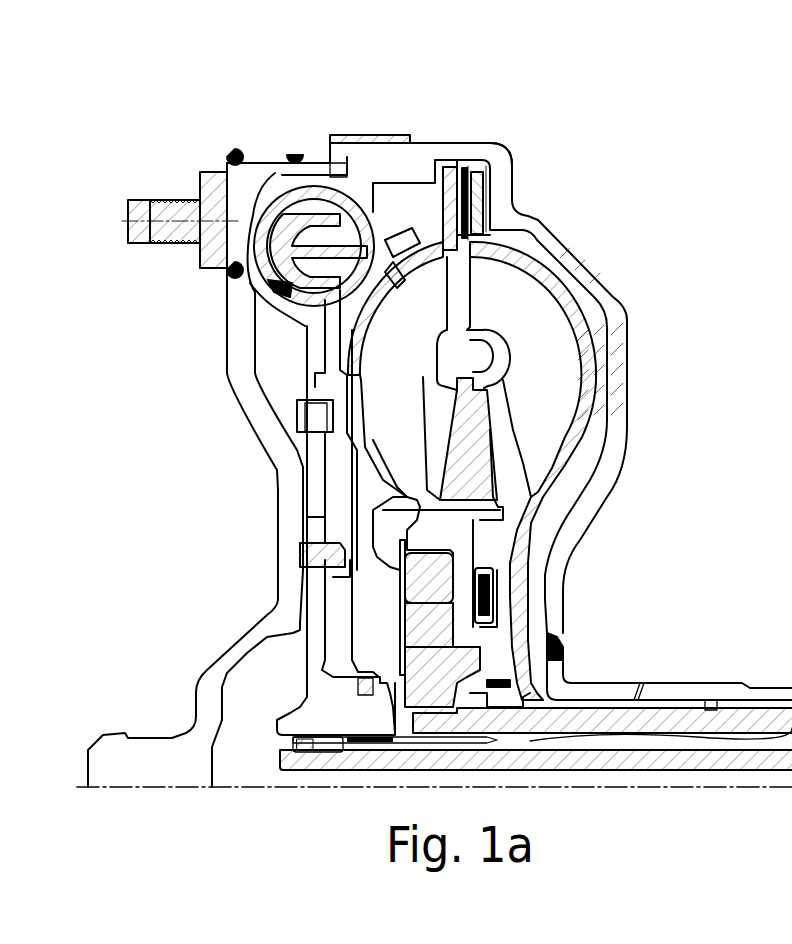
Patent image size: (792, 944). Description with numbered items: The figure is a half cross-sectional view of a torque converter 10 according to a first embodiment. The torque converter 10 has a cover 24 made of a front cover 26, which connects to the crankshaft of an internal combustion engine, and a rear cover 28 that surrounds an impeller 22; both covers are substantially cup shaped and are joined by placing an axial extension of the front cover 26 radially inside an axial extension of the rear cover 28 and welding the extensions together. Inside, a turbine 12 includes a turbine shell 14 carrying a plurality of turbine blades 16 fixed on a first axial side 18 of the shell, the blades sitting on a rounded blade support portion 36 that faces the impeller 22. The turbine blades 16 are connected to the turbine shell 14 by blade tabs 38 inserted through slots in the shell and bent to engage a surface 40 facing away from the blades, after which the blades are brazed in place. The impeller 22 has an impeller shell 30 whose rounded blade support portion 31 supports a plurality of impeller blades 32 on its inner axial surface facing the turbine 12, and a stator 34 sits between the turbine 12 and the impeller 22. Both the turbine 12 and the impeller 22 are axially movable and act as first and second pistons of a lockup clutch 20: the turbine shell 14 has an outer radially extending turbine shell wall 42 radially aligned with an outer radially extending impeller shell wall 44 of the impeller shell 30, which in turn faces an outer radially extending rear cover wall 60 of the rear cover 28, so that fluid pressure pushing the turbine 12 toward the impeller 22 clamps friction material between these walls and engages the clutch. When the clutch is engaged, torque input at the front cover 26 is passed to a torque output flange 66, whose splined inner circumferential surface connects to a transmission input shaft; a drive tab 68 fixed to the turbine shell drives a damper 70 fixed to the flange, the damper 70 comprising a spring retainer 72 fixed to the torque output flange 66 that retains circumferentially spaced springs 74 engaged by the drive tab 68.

The torque converter 10 is at (167, 183).
The turbine 12 is at (417, 233).
The turbine shell 14 is at (480, 272).
The turbine blades 16 is at (385, 414).
The first axial side 18 is at (378, 335).
The lockup clutch 20 is at (471, 131).
The impeller 22 is at (527, 250).
The cover 24 is at (319, 133).
The front cover 26 is at (247, 163).
The rear cover 28 is at (610, 302).
The impeller shell 30 is at (570, 280).
The rounded blade support portion 31 is at (584, 387).
The impeller blades 32 is at (520, 414).
The stator 34 is at (463, 542).
The rounded blade support portion 36 is at (367, 467).
The blade tabs 38 is at (398, 250).
The surface 40 is at (393, 263).
The outer radially extending turbine shell wall 42 is at (449, 172).
The outer radially extending impeller shell wall 44 is at (487, 187).
The outer radially extending rear cover wall 60 is at (497, 165).
The torque output flange 66 is at (313, 707).
The drive tab 68 is at (350, 252).
The damper 70 is at (278, 185).
The spring retainer 72 is at (258, 287).
The springs 74 is at (288, 298).